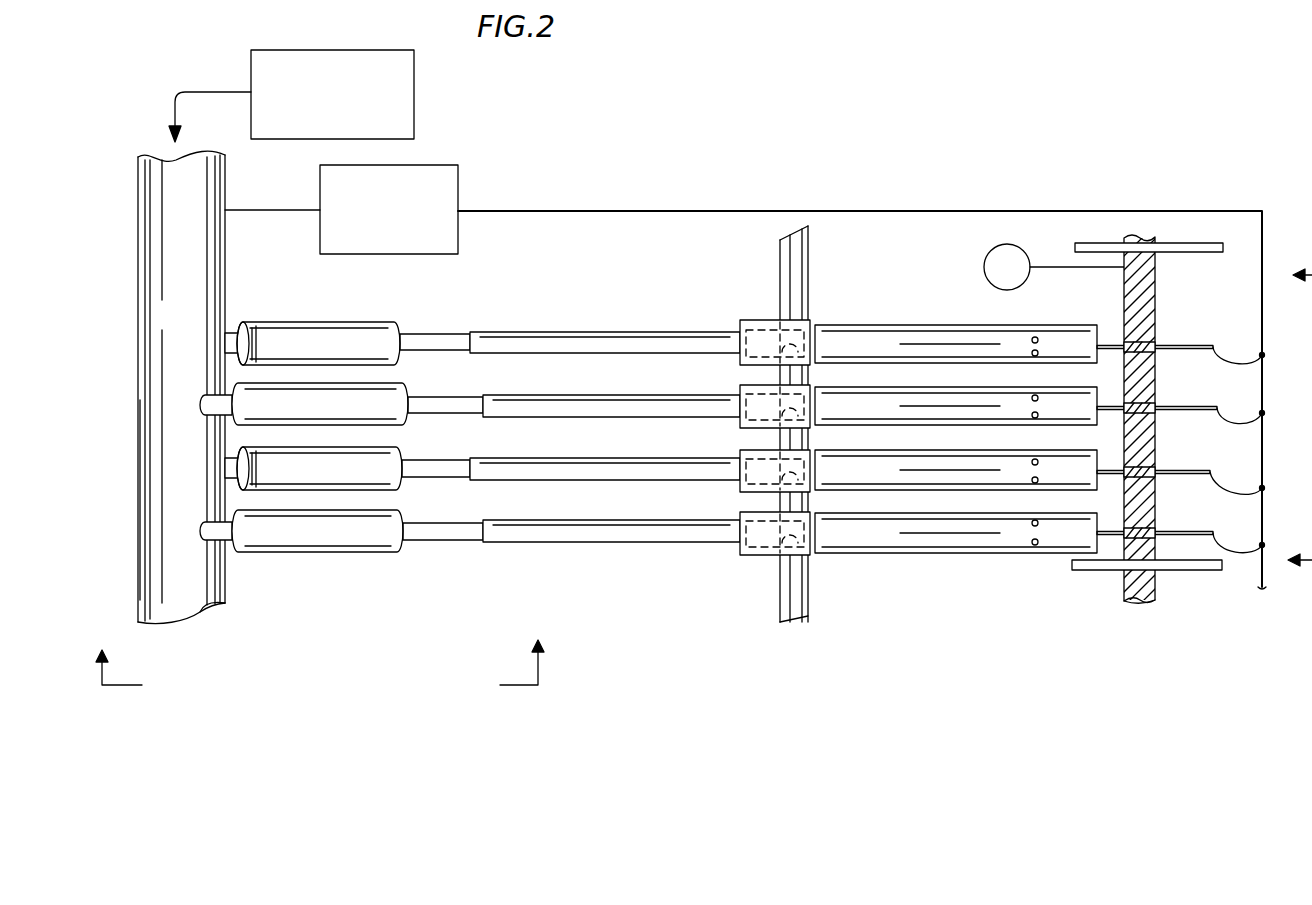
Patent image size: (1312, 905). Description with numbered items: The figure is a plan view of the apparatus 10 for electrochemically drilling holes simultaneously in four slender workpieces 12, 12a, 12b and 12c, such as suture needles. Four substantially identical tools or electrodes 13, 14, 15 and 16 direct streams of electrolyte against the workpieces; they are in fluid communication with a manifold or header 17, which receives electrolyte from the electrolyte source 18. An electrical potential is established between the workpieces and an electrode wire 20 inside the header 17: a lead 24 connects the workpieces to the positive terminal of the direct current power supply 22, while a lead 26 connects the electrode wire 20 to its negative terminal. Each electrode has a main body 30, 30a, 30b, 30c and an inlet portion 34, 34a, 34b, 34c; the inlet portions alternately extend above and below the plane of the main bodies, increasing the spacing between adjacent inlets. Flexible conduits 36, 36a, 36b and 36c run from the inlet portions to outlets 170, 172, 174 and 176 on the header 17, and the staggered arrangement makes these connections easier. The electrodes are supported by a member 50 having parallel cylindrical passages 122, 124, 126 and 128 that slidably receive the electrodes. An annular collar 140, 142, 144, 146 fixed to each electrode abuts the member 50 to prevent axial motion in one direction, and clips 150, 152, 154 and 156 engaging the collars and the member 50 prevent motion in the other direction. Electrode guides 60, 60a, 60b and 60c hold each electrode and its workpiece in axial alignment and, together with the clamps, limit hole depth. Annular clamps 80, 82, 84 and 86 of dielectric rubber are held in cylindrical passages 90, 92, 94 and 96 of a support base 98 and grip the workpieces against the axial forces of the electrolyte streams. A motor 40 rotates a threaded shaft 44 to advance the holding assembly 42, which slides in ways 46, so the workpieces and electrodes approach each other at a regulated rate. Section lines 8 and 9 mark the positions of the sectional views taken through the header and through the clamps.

The apparatus 10 is at (803, 160).
The workpiece 12 is at (1236, 510).
The workpiece 12a is at (1210, 472).
The workpiece 12b is at (1217, 408).
The workpiece 12c is at (1213, 347).
The electrode 13 is at (575, 548).
The electrode 14 is at (570, 490).
The electrode 15 is at (570, 428).
The electrode 16 is at (570, 358).
The header 17 is at (145, 529).
The electrolyte source 18 is at (311, 96).
The electrode wire 20 is at (225, 210).
The direct current power supply 22 is at (423, 254).
The lead 24 is at (650, 210).
The lead 26 is at (297, 210).
The main body 30 is at (530, 530).
The main body 30a is at (642, 472).
The main body 30b is at (642, 408).
The main body 30c is at (642, 345).
The inlet portion 34 is at (463, 538).
The inlet portion 34a is at (463, 476).
The inlet portion 34b is at (463, 407).
The inlet portion 34c is at (463, 343).
The flexible conduit 36 is at (362, 552).
The flexible conduit 36a is at (373, 480).
The flexible conduit 36b is at (362, 413).
The flexible conduit 36c is at (362, 347).
The motor 40 is at (985, 258).
The holding assembly 42 is at (1163, 584).
The threaded shaft 44 is at (1048, 267).
The ways 46 is at (1098, 243).
The member 50 is at (780, 590).
The electrode guide 60 is at (1022, 565).
The electrode guide 60a is at (983, 444).
The electrode guide 60b is at (983, 382).
The electrode guide 60c is at (983, 318).
The annular clamp 80 is at (1158, 533).
The annular clamp 82 is at (1158, 472).
The annular clamp 84 is at (1158, 408).
The annular clamp 86 is at (1158, 347).
The cylindrical passage 90 is at (1155, 540).
The cylindrical passage 92 is at (1124, 490).
The cylindrical passage 94 is at (1124, 425).
The cylindrical passage 96 is at (1124, 362).
The support base 98 is at (1150, 600).
The cylindrical passage 122 is at (787, 545).
The cylindrical passage 124 is at (787, 480).
The cylindrical passage 126 is at (787, 418).
The cylindrical passage 128 is at (787, 353).
The annular collar 140 is at (740, 533).
The annular collar 142 is at (740, 468).
The annular collar 144 is at (740, 403).
The annular collar 146 is at (740, 340).
The clip 150 is at (810, 553).
The clip 152 is at (810, 490).
The clip 154 is at (810, 425).
The clip 156 is at (810, 360).
The outlet 170 is at (223, 543).
The outlet 172 is at (228, 470).
The outlet 174 is at (202, 405).
The outlet 176 is at (228, 345).
The section line 8- 8 is at (320, 651).
The section line 9- 9 is at (1289, 417).